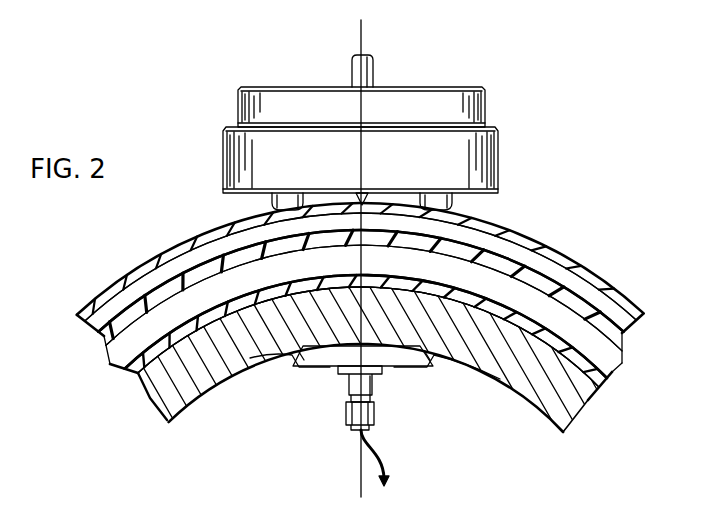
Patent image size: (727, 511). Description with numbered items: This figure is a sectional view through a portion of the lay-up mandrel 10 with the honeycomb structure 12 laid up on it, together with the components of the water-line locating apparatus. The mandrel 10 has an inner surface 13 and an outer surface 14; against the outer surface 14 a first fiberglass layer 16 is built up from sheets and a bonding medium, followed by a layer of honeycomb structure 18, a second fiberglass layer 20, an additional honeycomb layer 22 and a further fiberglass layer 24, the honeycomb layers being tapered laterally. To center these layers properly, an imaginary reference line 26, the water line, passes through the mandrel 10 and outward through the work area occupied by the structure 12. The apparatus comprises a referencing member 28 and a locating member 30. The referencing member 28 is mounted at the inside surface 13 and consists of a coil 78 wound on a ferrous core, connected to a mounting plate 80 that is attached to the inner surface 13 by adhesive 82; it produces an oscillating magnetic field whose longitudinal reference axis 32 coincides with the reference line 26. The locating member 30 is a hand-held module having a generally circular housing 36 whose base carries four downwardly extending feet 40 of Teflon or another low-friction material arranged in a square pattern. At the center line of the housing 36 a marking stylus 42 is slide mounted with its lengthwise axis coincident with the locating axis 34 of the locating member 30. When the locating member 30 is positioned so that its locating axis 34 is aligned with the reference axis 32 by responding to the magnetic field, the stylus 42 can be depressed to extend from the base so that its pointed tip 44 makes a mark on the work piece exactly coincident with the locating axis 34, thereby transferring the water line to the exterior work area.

The lay-up mandrel 10 is at (363, 365).
The honeycomb structure 12 is at (385, 309).
The inner surface 13 is at (533, 403).
The outer surface 14 is at (592, 354).
The first fiberglass layer 16 is at (615, 377).
The honeycomb structure layer 18 is at (613, 353).
The second fiberglass layer 20 is at (627, 335).
The additional honeycomb layer 22 is at (637, 322).
The further fiberglass layer 24 is at (627, 297).
The reference line 26 is at (363, 33).
The referencing member 28 is at (369, 409).
The locating member 30 is at (400, 115).
The reference axis 32 is at (360, 467).
The locating axis 34 is at (365, 50).
The housing 36 is at (500, 157).
The feet 40 is at (277, 210).
The marking stylus 42 is at (368, 80).
The pointed tip 44 is at (355, 196).
The coil 78 is at (345, 418).
The mounting plate 80 is at (387, 363).
The adhesive 82 is at (430, 368).